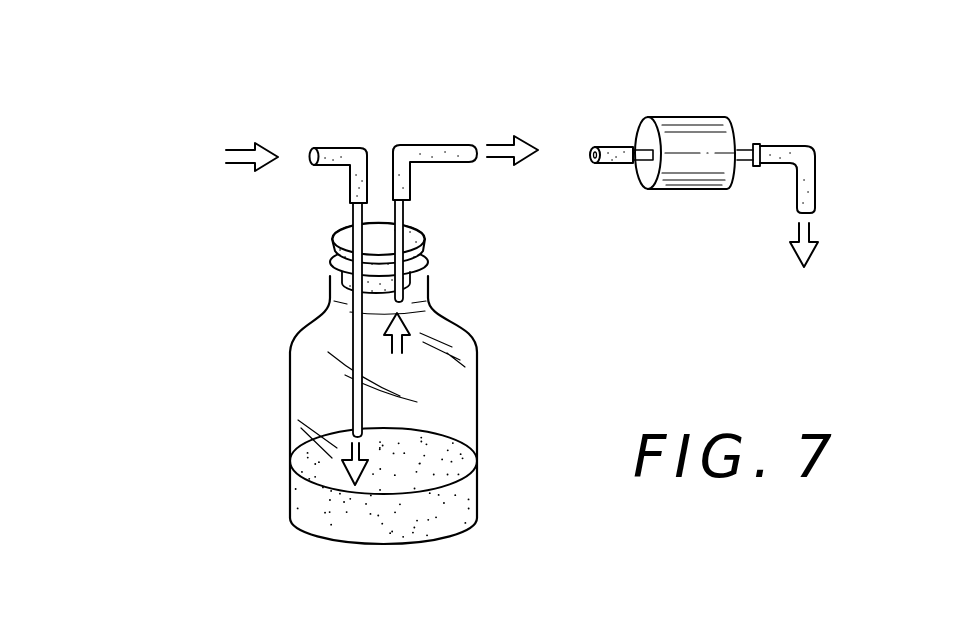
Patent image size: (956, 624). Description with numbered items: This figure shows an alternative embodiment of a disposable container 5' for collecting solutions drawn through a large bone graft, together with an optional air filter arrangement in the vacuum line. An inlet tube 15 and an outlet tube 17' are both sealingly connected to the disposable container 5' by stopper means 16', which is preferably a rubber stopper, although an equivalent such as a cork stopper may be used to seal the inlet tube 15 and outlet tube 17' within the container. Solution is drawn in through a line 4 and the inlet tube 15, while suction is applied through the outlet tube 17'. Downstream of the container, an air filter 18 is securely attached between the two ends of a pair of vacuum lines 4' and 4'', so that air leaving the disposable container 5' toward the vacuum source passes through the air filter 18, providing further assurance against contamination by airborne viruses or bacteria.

The inlet tube 4 is at (332, 132).
The vacuum line 4' is at (513, 130).
The vacuum line 4'' is at (785, 164).
The disposable container 5' is at (421, 396).
The inlet tube 15 is at (348, 213).
The stopper means 16' is at (445, 267).
The outlet tube 17' is at (421, 231).
The air filter 18 is at (692, 117).